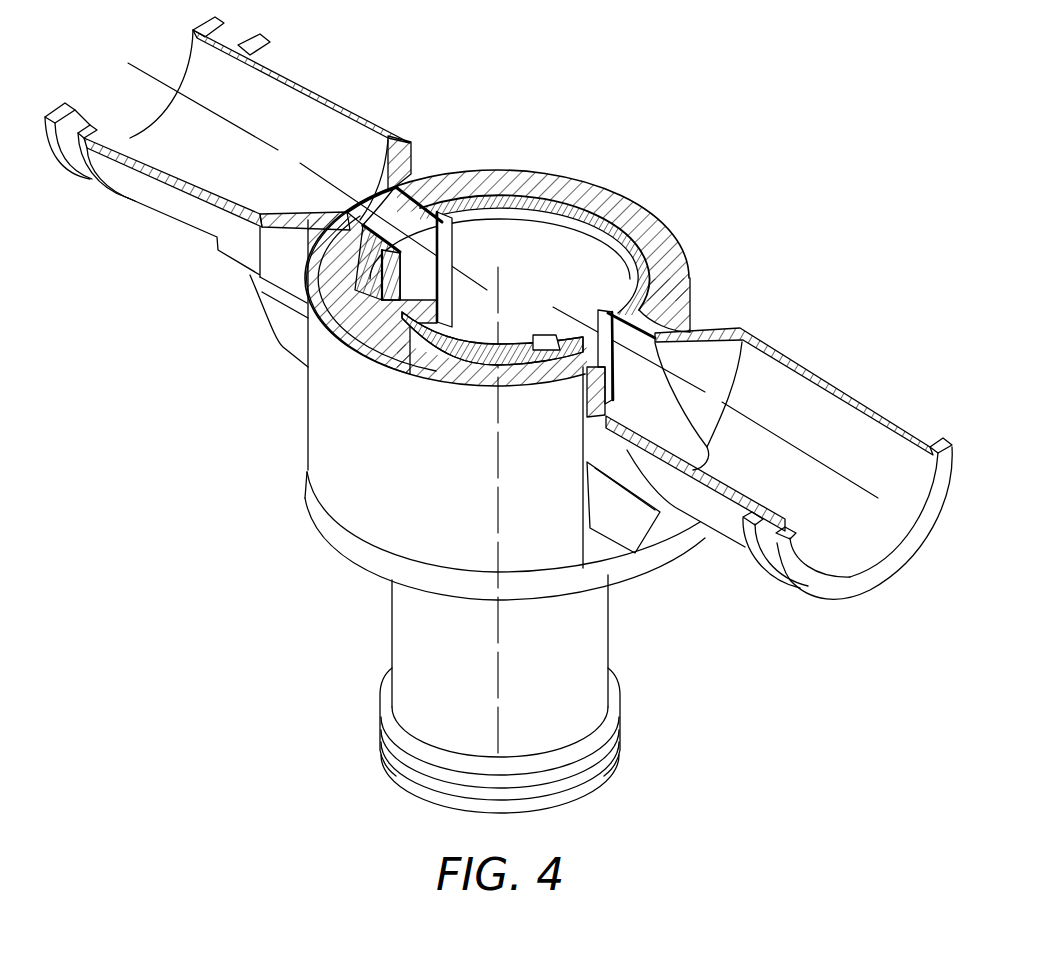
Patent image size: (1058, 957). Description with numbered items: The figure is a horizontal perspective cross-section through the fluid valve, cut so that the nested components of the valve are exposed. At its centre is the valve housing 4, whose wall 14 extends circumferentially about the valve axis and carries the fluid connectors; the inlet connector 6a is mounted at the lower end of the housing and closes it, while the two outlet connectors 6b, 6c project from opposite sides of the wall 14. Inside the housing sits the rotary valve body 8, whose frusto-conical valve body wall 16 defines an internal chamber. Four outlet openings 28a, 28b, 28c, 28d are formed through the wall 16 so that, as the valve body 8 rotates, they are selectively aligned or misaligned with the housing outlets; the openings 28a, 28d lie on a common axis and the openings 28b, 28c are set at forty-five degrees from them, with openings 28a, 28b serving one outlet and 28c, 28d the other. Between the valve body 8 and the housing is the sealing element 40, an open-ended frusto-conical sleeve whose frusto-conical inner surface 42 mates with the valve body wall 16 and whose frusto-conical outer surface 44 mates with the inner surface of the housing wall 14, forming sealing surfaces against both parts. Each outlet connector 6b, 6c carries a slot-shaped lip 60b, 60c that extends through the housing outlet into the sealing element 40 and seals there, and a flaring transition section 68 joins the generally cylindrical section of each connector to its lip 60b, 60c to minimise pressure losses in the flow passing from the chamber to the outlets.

The valve housing 4 is at (320, 444).
The inlet connector 6a is at (396, 626).
The fluid outlet connector 6b is at (313, 80).
The fluid outlet connector 6c is at (867, 397).
The rotary valve body 8 is at (520, 227).
The valve housing wall 14 is at (312, 399).
The frusto-conical valve body wall 16 is at (603, 200).
The outlet opening 28a is at (596, 310).
The outlet opening 28b is at (518, 342).
The outlet opening 28c is at (398, 278).
The outlet opening 28d is at (450, 238).
The sealing element 40 is at (670, 240).
The frusto-conical inner surface 42 is at (558, 210).
The frusto-conical outer surface 44 is at (650, 212).
The lip 60b is at (423, 186).
The lip 60c is at (660, 307).
The flaring transition section 68 is at (383, 186).